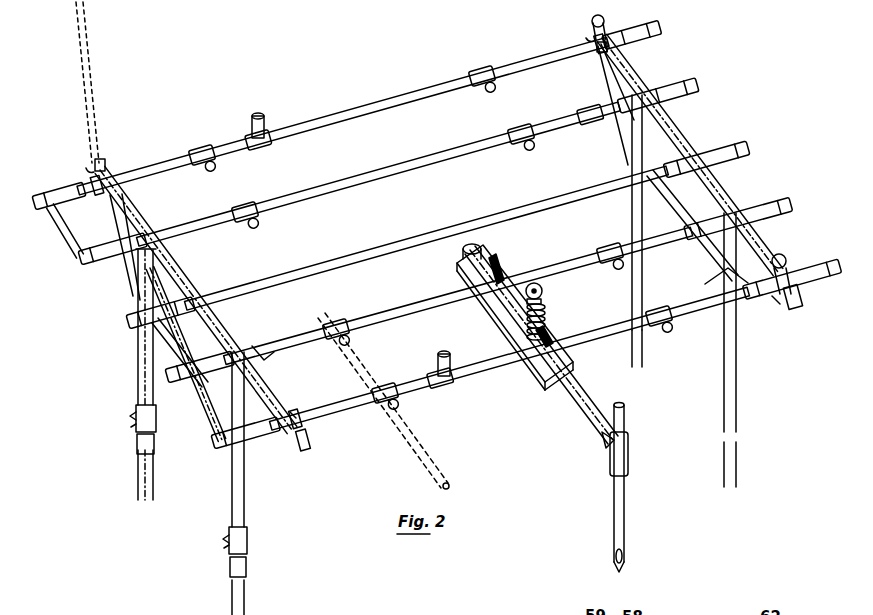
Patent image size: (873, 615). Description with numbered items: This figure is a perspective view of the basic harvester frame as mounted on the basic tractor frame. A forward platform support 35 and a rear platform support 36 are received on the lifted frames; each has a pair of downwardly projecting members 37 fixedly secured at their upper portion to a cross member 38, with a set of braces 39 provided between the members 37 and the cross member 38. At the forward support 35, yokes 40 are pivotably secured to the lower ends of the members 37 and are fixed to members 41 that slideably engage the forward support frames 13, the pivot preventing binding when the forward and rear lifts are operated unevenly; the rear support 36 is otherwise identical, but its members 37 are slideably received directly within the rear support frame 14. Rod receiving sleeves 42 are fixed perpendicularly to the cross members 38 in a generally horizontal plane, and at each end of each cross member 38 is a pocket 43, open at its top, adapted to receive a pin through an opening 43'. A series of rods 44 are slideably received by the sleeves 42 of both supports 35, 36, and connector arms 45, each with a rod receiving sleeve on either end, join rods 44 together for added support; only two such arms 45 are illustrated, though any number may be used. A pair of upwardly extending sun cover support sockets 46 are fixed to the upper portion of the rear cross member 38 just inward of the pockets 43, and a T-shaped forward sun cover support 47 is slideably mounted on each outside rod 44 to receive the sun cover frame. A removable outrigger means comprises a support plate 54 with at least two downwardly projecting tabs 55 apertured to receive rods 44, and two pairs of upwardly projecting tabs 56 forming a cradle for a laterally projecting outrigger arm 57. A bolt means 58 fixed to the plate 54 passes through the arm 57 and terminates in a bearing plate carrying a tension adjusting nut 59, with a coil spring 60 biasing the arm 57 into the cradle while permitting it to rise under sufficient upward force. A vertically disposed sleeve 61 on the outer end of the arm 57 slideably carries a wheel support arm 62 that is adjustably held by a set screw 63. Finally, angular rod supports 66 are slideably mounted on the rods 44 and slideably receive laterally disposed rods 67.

The support frame 13 is at (137, 481).
The rear support frame 14 is at (640, 356).
The forward platform support 35 is at (190, 270).
The rear platform support 36 is at (680, 133).
The downwardly projecting members 37 is at (140, 368).
The cross member 38 is at (138, 206).
The braces 39 is at (134, 288).
The yokes 40 is at (134, 425).
The members 41 is at (156, 440).
The rod receiving sleeves 42 is at (125, 172).
The pocket 43 is at (458, 227).
The opening 43' is at (421, 252).
The rods 44 is at (440, 153).
The connector arms 45 is at (62, 236).
The sun cover support sockets 46 is at (606, 26).
The T-shaped forward sun cover support 47 is at (264, 122).
The support plate 54 is at (495, 325).
The downwardly projecting tabs 55 is at (470, 300).
The upwardly projecting tabs 56 is at (495, 262).
The outrigger arm 57 is at (508, 285).
The bolt means 58 is at (543, 290).
The tension adjusting nut 59 is at (548, 300).
The coil spring 60 is at (548, 320).
The vertically disposed sleeve 61 is at (628, 428).
The wheel support arm 62 is at (627, 498).
The set screw 63 is at (630, 455).
The angular rod supports 66 is at (205, 150).
The laterally disposed rods 67 is at (418, 466).